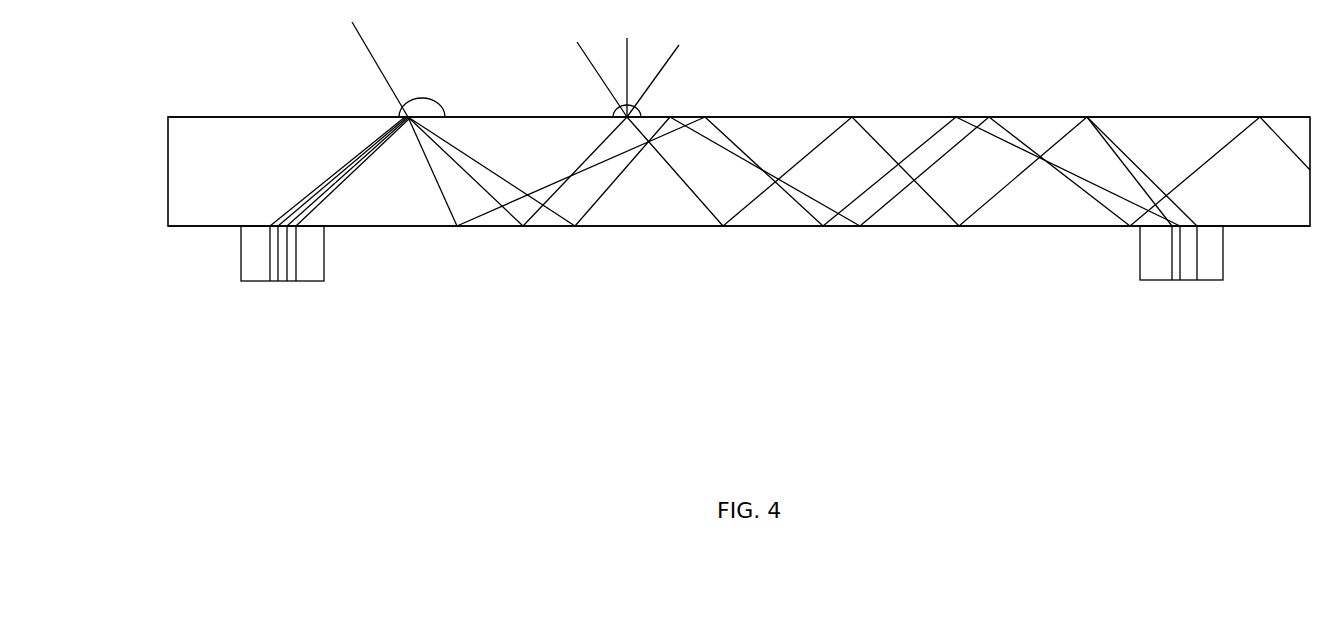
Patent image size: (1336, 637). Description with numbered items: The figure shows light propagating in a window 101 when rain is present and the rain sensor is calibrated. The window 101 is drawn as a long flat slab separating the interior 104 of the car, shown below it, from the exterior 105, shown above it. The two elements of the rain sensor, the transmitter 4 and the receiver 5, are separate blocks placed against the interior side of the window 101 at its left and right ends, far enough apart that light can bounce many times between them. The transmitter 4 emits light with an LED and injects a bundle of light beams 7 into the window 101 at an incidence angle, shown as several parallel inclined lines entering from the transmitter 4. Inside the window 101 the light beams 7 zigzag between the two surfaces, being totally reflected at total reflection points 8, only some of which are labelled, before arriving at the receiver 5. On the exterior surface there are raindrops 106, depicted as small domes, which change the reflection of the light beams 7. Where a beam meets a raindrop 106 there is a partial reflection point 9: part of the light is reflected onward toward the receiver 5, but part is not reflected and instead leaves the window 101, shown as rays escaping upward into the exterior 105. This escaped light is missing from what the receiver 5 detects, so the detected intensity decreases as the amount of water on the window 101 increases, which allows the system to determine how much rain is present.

The window 101 is at (168, 165).
The interior 104 is at (788, 325).
The exterior 105 is at (787, 55).
The raindrops 106 is at (442, 105).
The transmitter 4 is at (241, 257).
The receiver 5 is at (1223, 252).
The light beams 7 is at (338, 190).
The total reflection points 8 is at (852, 117).
The partial reflection points 9 is at (614, 114).